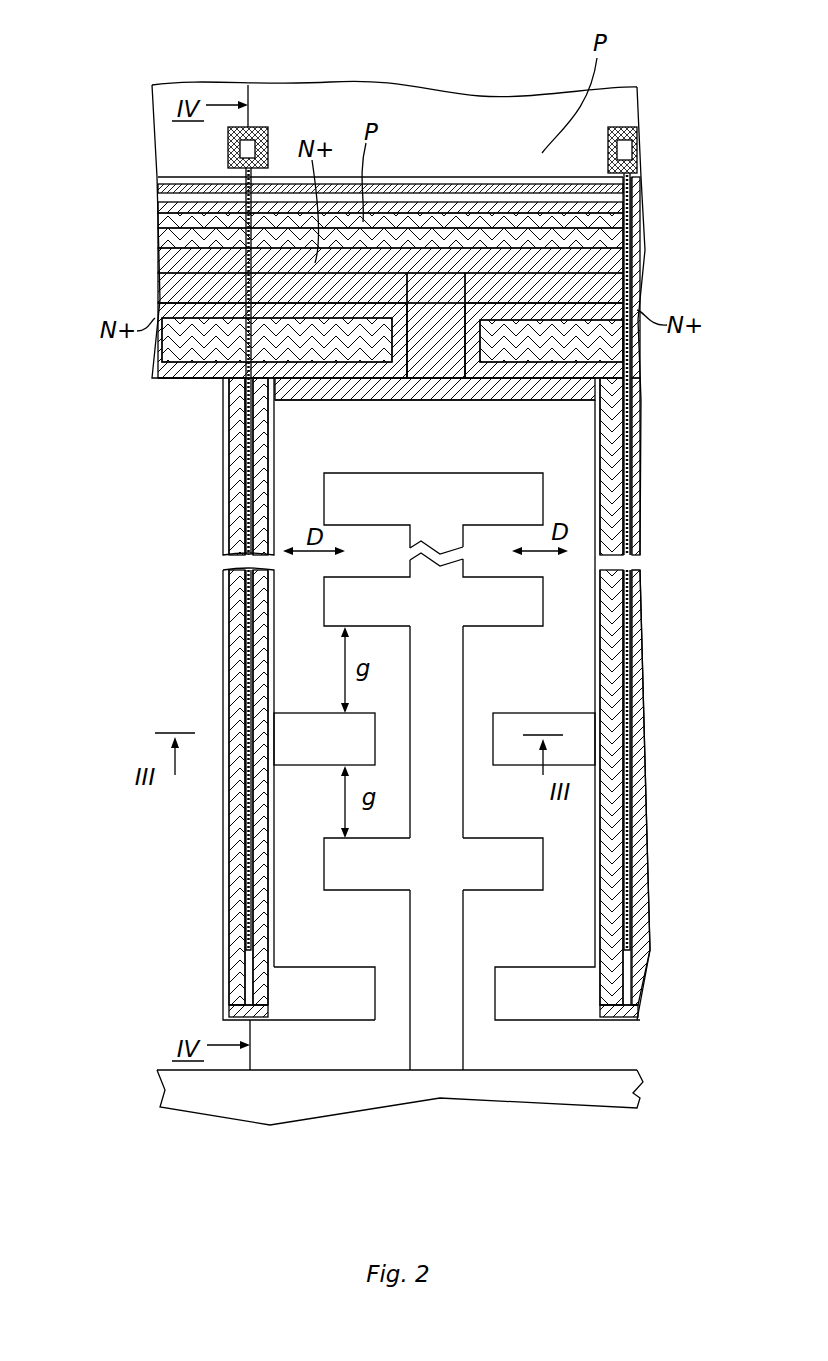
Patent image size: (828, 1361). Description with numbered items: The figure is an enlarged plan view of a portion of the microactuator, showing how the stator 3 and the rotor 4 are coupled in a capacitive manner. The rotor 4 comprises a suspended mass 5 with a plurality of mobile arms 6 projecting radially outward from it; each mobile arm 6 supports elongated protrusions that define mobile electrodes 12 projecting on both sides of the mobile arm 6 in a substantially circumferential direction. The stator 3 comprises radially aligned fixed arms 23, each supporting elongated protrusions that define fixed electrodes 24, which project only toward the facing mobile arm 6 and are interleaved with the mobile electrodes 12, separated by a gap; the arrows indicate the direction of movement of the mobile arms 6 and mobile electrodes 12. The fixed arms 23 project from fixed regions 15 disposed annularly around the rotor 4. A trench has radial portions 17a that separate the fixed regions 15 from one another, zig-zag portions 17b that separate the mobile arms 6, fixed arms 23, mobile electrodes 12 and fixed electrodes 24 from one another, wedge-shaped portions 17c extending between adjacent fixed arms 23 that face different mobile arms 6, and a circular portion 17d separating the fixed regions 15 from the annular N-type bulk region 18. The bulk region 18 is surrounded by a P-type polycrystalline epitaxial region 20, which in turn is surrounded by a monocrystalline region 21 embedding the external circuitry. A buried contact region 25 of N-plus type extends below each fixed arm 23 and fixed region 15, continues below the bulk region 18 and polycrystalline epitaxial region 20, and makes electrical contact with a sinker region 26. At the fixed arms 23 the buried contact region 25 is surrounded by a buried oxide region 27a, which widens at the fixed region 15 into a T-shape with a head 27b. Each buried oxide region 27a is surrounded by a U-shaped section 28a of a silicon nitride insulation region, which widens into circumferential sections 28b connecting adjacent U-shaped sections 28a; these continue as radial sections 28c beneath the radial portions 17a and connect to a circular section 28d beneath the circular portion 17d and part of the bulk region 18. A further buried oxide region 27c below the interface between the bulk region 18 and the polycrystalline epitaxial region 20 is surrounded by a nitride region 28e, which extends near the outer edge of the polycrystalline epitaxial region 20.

The stator 3 is at (136, 350).
The rotor 4 is at (659, 1079).
The suspended mass 5 is at (432, 1087).
The mobile arm 6 is at (452, 683).
The mobile electrode 12 is at (385, 512).
The fixed region 15 is at (157, 313).
The radial portion of trench 17a is at (440, 290).
The zig-zag portion of trench 17b is at (325, 948).
The wedge-shaped portion of trench 17c is at (160, 870).
The circular portion of trench 17d is at (515, 290).
The bulk region 18 is at (157, 262).
The polycrystalline epitaxial region 20 is at (157, 184).
The monocrystalline region 21 is at (168, 100).
The fixed arm 23 is at (214, 638).
The fixed electrode 24 is at (312, 740).
The buried contact region 25 is at (248, 490).
The sinker region 26 is at (262, 125).
The buried oxide region 27a is at (245, 605).
The head of buried oxide region 27b is at (155, 352).
The buried oxide region 27c is at (640, 247).
The U-shaped section of silicon nitride insulation region 28a is at (240, 437).
The circumferential section of silicon nitride insulation region 28b is at (448, 387).
The radial section of silicon nitride insulation region 28c is at (430, 357).
The circular section of silicon nitride insulation region 28d is at (640, 287).
The nitride region 28e is at (640, 198).